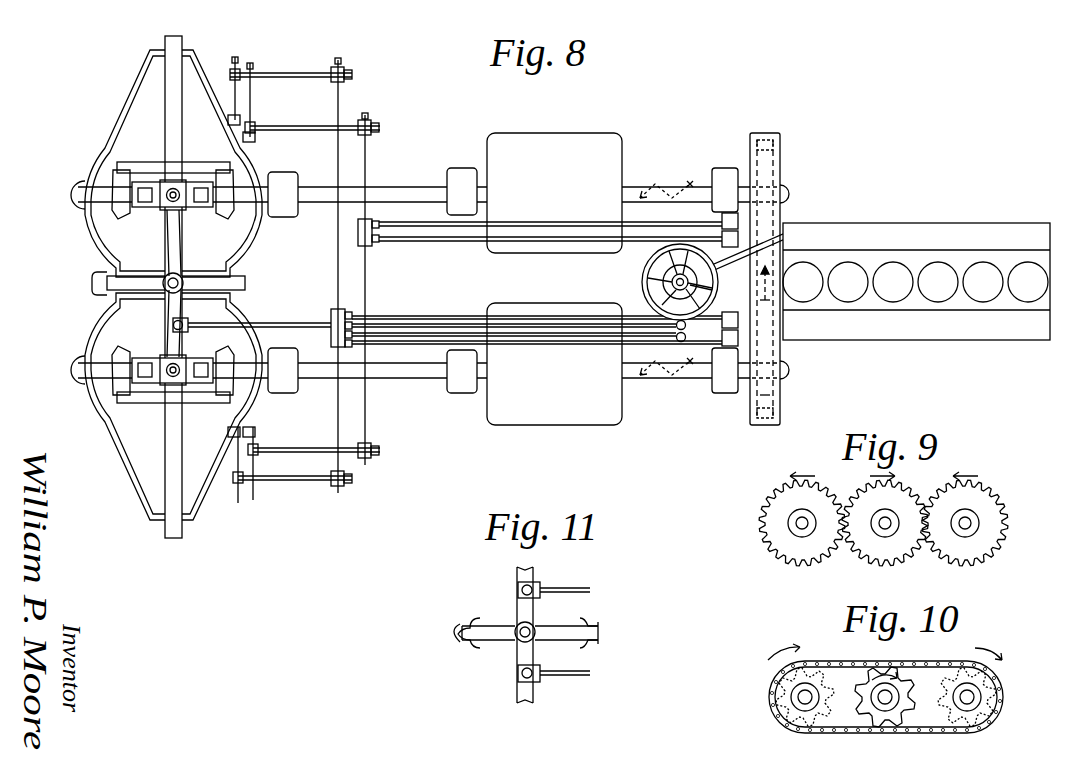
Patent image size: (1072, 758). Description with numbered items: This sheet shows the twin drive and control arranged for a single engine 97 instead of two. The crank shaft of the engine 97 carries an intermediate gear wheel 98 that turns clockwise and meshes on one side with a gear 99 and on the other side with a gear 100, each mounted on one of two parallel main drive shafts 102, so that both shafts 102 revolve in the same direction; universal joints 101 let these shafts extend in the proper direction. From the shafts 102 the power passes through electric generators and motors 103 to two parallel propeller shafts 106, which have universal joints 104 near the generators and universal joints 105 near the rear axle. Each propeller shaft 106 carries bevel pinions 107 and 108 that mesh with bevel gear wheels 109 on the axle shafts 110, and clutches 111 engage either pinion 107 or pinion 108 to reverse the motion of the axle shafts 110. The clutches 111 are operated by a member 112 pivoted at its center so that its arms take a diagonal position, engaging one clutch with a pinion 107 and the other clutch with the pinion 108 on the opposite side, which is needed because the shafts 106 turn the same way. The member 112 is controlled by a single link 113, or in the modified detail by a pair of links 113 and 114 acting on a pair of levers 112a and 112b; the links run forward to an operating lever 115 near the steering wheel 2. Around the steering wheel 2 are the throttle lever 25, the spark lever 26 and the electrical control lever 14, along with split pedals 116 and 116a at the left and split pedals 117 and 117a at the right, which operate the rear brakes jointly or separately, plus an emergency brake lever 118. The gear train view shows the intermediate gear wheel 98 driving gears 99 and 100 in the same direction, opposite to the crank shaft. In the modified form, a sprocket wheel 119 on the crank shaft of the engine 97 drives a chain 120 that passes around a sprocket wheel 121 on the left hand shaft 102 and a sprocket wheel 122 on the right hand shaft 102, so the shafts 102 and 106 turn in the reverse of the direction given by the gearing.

In FIG. 8, the steering wheel 2 is at (643, 279).
In FIG. 8, the electrical control lever 14 is at (658, 260).
In FIG. 8, the throttle lever 25 is at (647, 292).
In FIG. 8, the spark lever 26 is at (705, 286).
In FIG. 8, the engine 97 is at (1012, 252).
In FIG. 8, the intermediate gear wheel 98 is at (780, 312).
In FIG. 9, the intermediate gear wheel 98 is at (910, 498).
In FIG. 8, the gear 99 is at (780, 400).
In FIG. 9, the gear 99 is at (776, 503).
In FIG. 8, the gear 100 is at (780, 160).
In FIG. 9, the gear 100 is at (998, 504).
In FIG. 8, the universal joints 101 is at (724, 168).
In FIG. 8, the main drive shafts 102 is at (668, 185).
In FIG. 8, the electric generators and motors 103 is at (572, 133).
In FIG. 8, the universal joints 104 is at (461, 168).
In FIG. 8, the universal joints 105 is at (283, 172).
In FIG. 8, the propeller shafts 106 is at (393, 185).
In FIG. 8, the bevel pinion 107 is at (230, 208).
In FIG. 8, the bevel pinion 108 is at (113, 175).
In FIG. 8, the bevel gear wheels 109 is at (195, 162).
In FIG. 8, the axle shafts 110 is at (170, 120).
In FIG. 8, the clutches 111 is at (182, 202).
In FIG. 8, the member 112 is at (181, 244).
In FIG. 11, the lever 112a is at (515, 605).
In FIG. 11, the lever 112b is at (520, 655).
In FIG. 8, the link 113 is at (275, 325).
In FIG. 11, the link 113 is at (570, 676).
In FIG. 11, the link 114 is at (574, 588).
In FIG. 8, the operating lever 115 is at (686, 325).
In FIG. 8, the split pedal 116 is at (720, 218).
In FIG. 8, the split pedal 116a is at (740, 240).
In FIG. 8, the split pedal 117 is at (728, 312).
In FIG. 8, the split pedal 117a is at (740, 338).
In FIG. 8, the emergency brake lever 118 is at (679, 342).
In FIG. 10, the sprocket wheel 119 is at (900, 685).
In FIG. 10, the chain 120 is at (998, 680).
In FIG. 10, the sprocket wheel 121 is at (780, 697).
In FIG. 10, the sprocket wheel 122 is at (990, 701).